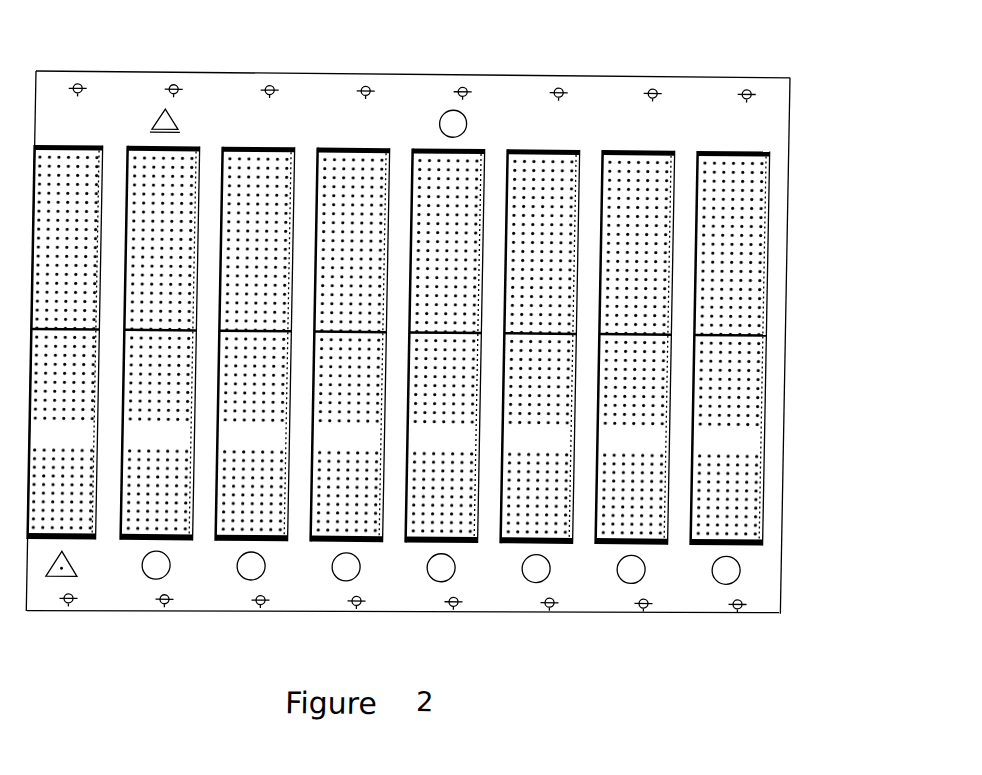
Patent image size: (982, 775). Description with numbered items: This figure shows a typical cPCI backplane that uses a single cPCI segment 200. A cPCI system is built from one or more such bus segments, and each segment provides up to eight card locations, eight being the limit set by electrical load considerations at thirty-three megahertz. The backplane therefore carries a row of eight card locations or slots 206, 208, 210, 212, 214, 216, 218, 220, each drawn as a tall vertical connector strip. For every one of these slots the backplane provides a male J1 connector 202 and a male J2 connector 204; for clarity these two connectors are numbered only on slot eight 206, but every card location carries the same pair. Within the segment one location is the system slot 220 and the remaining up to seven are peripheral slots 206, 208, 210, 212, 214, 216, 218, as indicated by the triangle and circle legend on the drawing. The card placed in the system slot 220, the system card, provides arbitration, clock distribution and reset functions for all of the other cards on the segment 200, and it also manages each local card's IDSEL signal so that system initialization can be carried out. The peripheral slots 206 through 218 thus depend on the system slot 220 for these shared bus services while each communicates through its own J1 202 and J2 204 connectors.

The cPCI segment 200 is at (405, 58).
The male J1 connector 202 is at (771, 433).
The male J2 connector 204 is at (769, 263).
The slot 8 206 is at (771, 404).
The peripheral slot 208 is at (620, 544).
The peripheral slot 210 is at (528, 546).
The peripheral slot 212 is at (432, 544).
The peripheral slot 214 is at (334, 544).
The peripheral slot 216 is at (244, 543).
The peripheral slot 218 is at (142, 544).
The system slot 220 is at (44, 551).